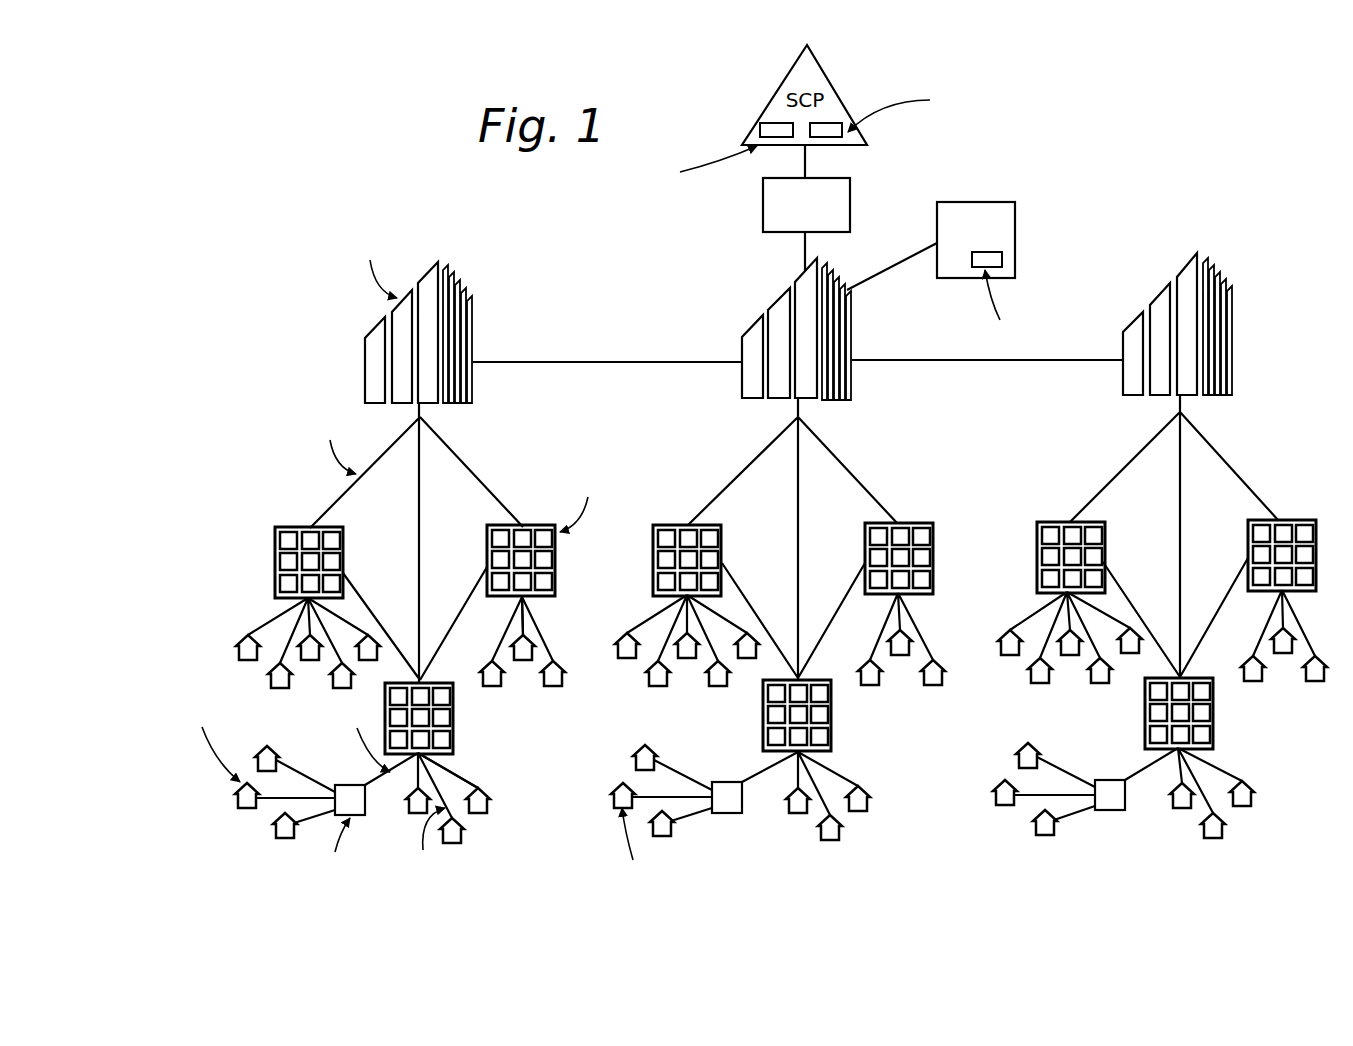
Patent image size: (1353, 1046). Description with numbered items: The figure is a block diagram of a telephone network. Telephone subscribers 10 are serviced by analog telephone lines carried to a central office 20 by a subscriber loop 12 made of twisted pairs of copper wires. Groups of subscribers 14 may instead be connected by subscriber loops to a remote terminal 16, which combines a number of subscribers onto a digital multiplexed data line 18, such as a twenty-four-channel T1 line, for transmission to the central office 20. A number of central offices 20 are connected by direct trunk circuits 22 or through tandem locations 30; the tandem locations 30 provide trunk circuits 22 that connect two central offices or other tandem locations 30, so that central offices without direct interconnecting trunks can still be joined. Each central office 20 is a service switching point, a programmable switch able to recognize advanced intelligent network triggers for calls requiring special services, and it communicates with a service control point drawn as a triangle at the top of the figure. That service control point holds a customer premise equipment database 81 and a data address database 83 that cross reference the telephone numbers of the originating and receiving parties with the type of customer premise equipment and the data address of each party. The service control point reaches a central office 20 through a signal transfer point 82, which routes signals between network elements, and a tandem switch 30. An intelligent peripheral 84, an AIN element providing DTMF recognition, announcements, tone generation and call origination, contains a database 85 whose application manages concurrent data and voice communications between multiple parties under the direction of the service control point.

The telephone subscriber 10 is at (613, 795).
The subscriber loop 12 is at (518, 633).
The group of subscribers 14 is at (243, 808).
The remote terminal 16 is at (352, 784).
The digital multiplexed data line 18 is at (393, 770).
The central office 20 is at (555, 560).
The trunk circuit 22 is at (353, 487).
The tandem location 30 is at (453, 280).
The customer premise equipment (CPE) database 81 is at (762, 127).
The signal transfer point (STP) 82 is at (850, 195).
The data address database 83 is at (838, 127).
The intelligent peripheral 84 is at (1015, 210).
The database 85 is at (1002, 258).